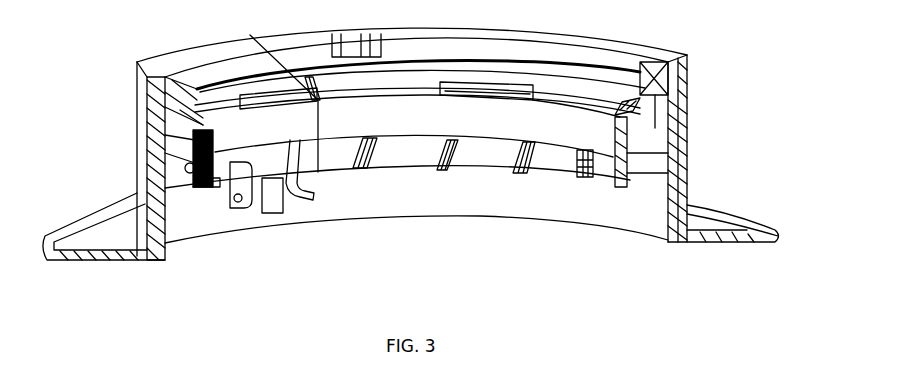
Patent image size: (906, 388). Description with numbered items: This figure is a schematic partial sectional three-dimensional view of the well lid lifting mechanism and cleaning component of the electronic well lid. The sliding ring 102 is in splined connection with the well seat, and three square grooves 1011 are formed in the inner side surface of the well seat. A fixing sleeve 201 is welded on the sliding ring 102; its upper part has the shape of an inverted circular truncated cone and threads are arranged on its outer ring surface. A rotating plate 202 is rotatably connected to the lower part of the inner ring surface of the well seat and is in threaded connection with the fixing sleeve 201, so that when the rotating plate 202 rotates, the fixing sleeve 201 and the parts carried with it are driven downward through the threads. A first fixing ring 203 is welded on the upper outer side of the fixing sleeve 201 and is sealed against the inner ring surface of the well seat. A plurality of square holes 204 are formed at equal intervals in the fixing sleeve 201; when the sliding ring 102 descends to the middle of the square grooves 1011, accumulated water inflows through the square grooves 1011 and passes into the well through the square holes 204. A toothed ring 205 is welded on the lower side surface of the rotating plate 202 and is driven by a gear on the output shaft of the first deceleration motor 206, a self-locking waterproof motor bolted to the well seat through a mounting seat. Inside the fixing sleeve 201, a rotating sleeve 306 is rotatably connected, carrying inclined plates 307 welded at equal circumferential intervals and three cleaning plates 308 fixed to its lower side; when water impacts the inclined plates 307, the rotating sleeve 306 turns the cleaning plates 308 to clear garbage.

The sliding ring 102 is at (182, 58).
The square holes 204 is at (277, 83).
The square grooves 1011 is at (689, 88).
The first fixing ring 203 is at (165, 135).
The fixing sleeve 201 is at (196, 162).
The rotating plate 202 is at (174, 183).
The toothed ring 205 is at (212, 178).
The first deceleration motor 206 is at (266, 207).
The cleaning plates 308 is at (303, 207).
The inclined plates 307 is at (523, 160).
The rotating sleeve 306 is at (598, 182).